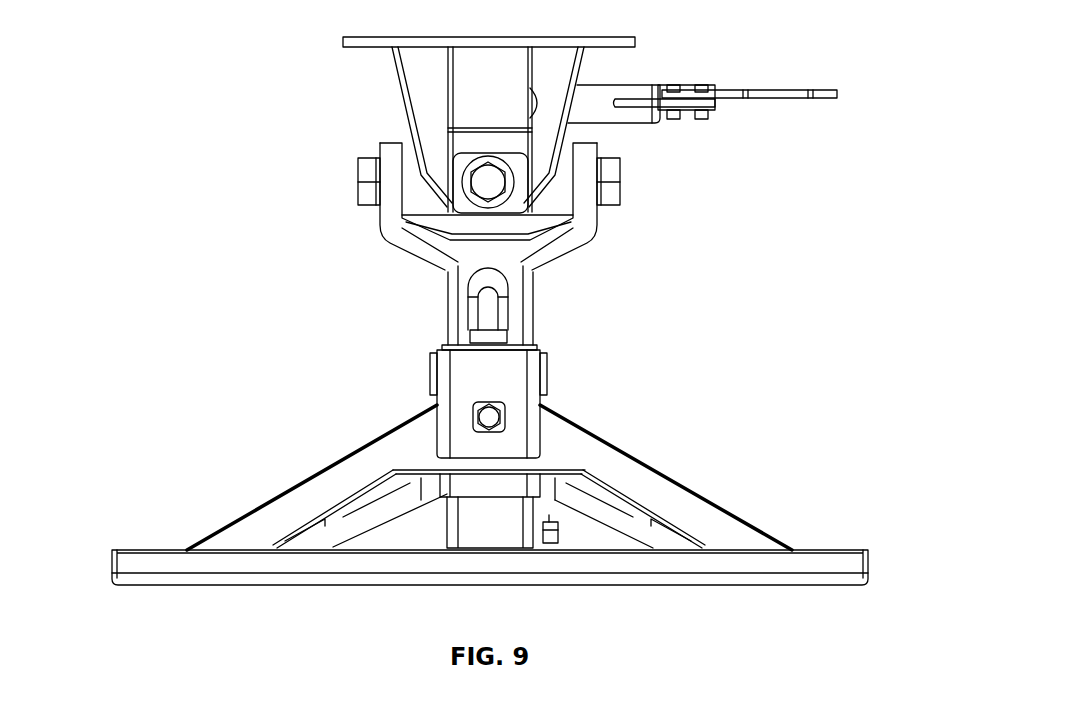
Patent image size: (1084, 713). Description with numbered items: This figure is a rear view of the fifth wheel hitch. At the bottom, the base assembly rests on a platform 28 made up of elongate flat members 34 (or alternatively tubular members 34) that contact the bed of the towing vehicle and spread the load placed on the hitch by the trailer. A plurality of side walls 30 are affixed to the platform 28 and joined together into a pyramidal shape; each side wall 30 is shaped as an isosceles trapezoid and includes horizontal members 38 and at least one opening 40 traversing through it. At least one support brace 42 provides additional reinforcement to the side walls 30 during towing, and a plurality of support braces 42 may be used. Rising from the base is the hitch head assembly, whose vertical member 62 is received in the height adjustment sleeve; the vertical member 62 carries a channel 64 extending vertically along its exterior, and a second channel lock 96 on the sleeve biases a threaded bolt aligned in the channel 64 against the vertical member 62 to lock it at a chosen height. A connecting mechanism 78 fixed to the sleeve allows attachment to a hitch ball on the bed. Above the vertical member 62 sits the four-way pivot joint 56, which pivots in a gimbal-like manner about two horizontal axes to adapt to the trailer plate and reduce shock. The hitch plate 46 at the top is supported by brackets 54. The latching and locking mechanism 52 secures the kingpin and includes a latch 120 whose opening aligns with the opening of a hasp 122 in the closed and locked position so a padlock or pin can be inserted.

The latching and locking mechanism 52 is at (847, 46).
The hitch plate 46 is at (408, 37).
The brackets 54 is at (395, 82).
The latch 120 is at (683, 88).
The hasp 122 is at (635, 108).
The four-way pivot joint 56 is at (380, 220).
The vertical member 62 is at (465, 305).
The channel 64 is at (493, 317).
The connecting mechanism 78 is at (433, 383).
The second channel lock 96 is at (510, 410).
The horizontal members 38 is at (320, 472).
The side walls 30 is at (489, 477).
The opening 40 is at (373, 498).
The support brace 42 is at (413, 518).
The platform 28 is at (108, 562).
The flat members 34 is at (787, 583).